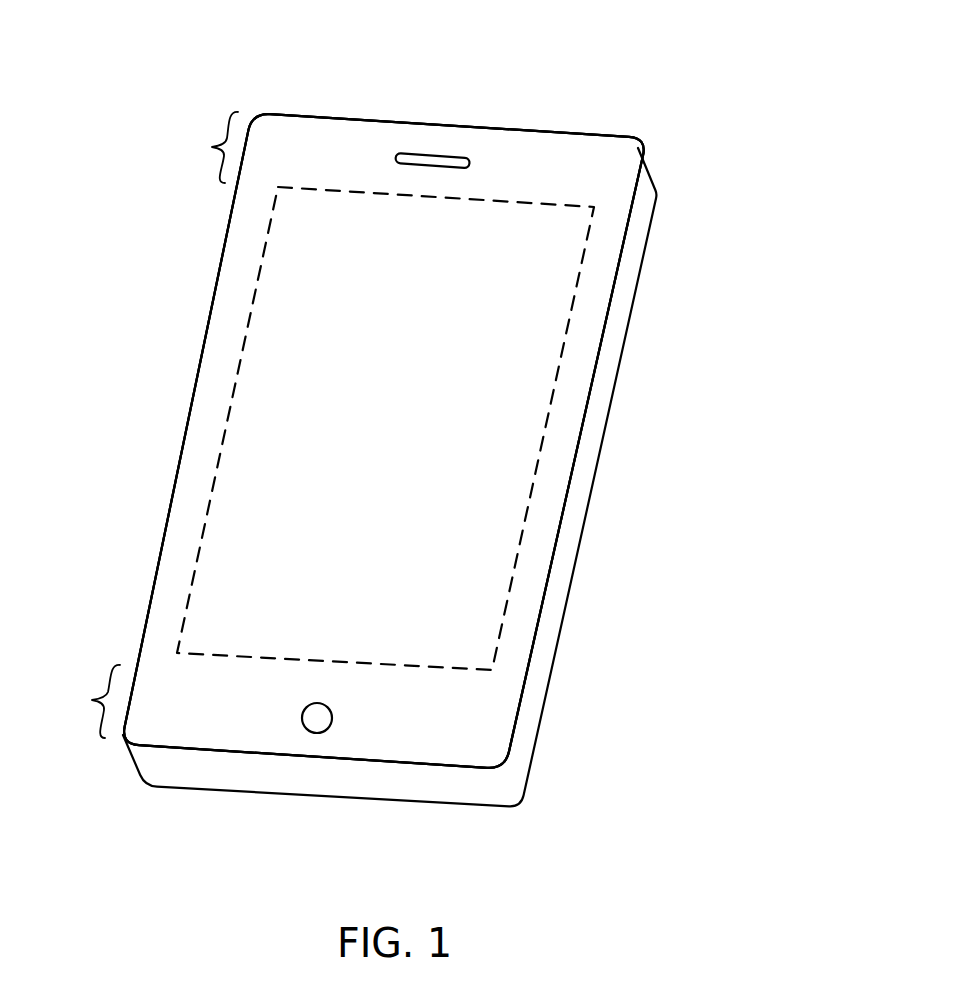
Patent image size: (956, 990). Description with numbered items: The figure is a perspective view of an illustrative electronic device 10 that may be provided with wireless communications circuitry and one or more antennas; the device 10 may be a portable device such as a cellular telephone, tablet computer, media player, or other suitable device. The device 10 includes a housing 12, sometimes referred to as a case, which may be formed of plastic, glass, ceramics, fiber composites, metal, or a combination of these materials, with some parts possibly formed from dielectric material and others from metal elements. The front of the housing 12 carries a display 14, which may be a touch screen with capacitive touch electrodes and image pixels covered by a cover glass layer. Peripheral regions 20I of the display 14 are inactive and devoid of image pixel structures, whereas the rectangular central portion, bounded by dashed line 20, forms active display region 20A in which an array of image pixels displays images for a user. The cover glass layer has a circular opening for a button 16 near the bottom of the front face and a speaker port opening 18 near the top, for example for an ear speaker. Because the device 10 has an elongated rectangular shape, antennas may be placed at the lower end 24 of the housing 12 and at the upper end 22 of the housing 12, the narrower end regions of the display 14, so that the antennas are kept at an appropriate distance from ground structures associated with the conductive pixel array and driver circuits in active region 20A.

The electronic device 10 is at (719, 54).
The housing 12 is at (640, 286).
The display 14 is at (528, 422).
The button 16 is at (317, 733).
The speaker port opening 18 is at (428, 157).
The dashed line 20 is at (218, 457).
The active display region 20A is at (232, 542).
The peripheral regions 20I is at (521, 157).
The upper end 22 is at (208, 147).
The lower end 24 is at (90, 701).